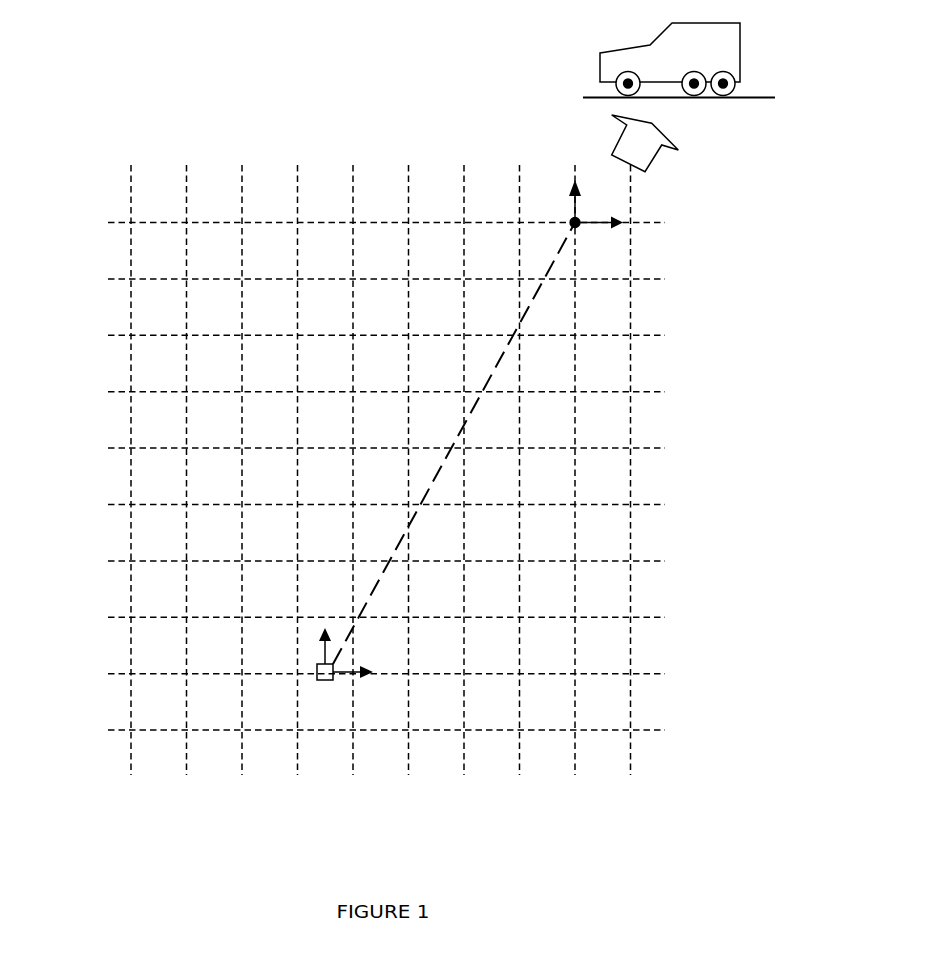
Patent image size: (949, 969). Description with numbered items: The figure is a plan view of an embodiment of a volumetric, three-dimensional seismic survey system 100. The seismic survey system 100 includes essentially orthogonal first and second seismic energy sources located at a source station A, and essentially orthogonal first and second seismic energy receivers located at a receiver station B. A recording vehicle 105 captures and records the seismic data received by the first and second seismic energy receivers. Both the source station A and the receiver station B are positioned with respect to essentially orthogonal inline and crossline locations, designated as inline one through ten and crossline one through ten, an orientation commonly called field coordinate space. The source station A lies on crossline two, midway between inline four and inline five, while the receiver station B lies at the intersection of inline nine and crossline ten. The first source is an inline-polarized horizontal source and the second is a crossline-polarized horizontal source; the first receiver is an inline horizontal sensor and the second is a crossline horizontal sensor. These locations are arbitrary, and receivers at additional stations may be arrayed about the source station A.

The seismic survey system 100 is at (874, 78).
The recording vehicle 105 is at (754, 68).
The source station A is at (342, 669).
The receiver station B is at (586, 216).